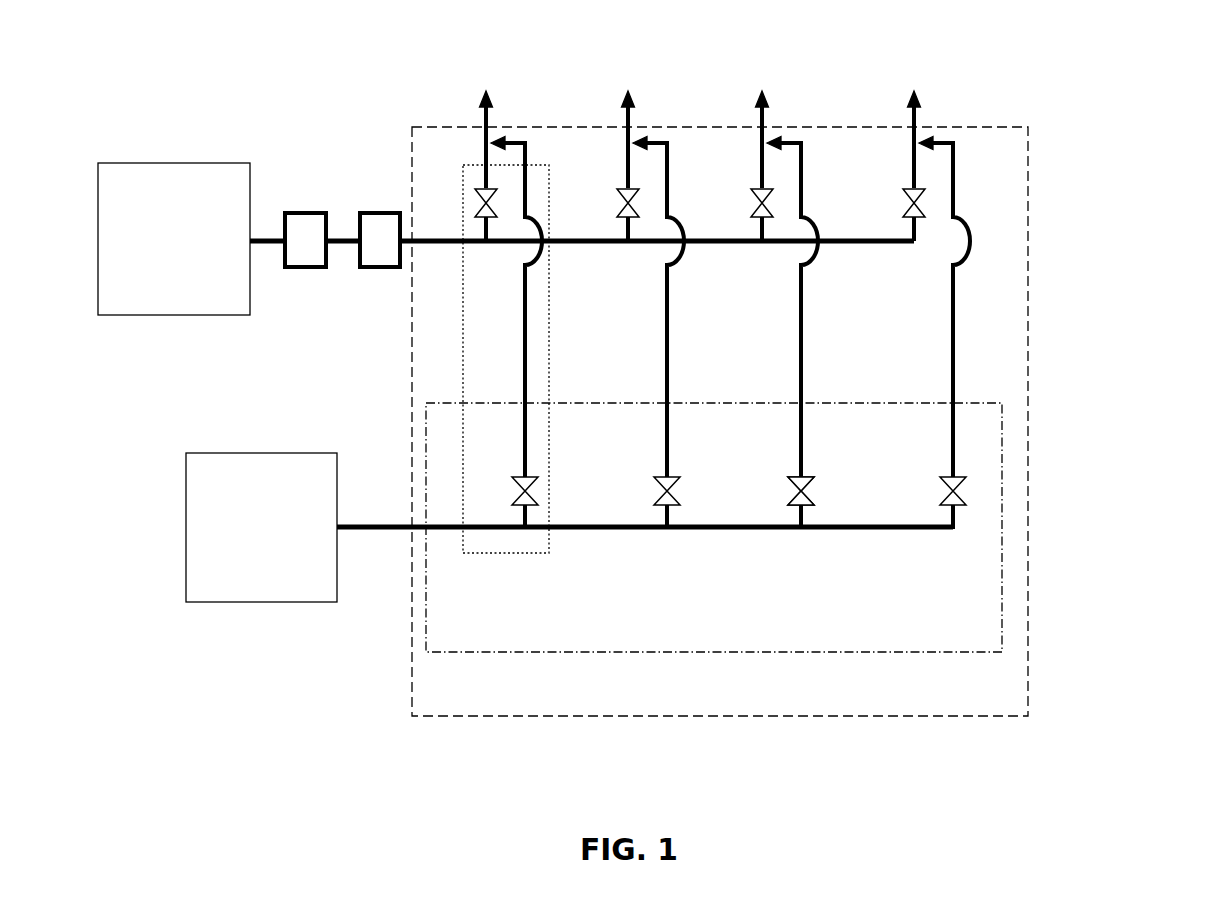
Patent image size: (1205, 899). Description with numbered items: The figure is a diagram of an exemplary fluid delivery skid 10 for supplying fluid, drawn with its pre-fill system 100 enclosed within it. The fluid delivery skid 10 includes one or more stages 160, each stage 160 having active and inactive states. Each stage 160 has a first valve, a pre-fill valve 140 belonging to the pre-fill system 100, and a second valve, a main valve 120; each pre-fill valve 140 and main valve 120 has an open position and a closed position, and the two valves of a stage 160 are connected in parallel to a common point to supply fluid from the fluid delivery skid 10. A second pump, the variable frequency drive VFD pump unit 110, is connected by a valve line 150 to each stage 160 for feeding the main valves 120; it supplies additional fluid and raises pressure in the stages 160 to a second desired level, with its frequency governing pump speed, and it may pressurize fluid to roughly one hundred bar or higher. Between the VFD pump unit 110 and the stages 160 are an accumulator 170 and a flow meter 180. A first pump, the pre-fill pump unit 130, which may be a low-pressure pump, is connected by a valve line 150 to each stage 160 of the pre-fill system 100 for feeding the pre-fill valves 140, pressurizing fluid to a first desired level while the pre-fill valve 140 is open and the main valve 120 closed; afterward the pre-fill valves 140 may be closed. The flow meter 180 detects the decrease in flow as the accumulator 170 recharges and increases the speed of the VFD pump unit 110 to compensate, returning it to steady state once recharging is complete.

The fluid delivery skid 10 is at (720, 421).
The pre-fill system 100 is at (714, 527).
The VFD pump unit 110 is at (174, 239).
The main valve 120 is at (883, 167).
The pre-fill pump unit 130 is at (261, 527).
The pre-fill valve 140 is at (834, 516).
The valve line 150 is at (889, 258).
The stage 160 is at (553, 558).
The accumulator 170 is at (300, 188).
The flow meter 180 is at (374, 161).